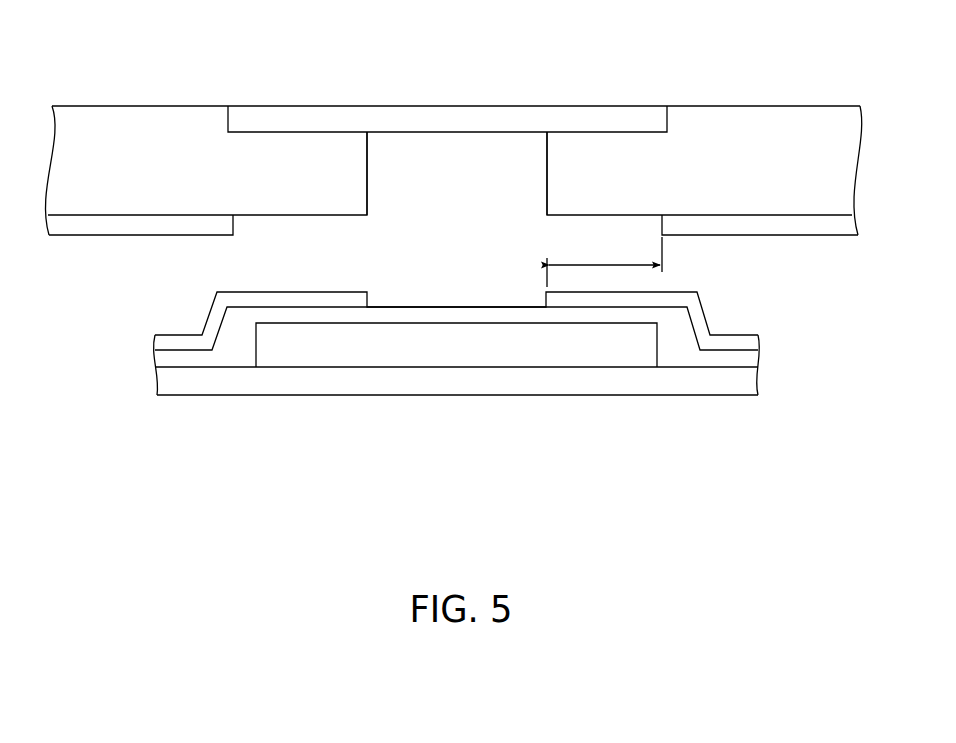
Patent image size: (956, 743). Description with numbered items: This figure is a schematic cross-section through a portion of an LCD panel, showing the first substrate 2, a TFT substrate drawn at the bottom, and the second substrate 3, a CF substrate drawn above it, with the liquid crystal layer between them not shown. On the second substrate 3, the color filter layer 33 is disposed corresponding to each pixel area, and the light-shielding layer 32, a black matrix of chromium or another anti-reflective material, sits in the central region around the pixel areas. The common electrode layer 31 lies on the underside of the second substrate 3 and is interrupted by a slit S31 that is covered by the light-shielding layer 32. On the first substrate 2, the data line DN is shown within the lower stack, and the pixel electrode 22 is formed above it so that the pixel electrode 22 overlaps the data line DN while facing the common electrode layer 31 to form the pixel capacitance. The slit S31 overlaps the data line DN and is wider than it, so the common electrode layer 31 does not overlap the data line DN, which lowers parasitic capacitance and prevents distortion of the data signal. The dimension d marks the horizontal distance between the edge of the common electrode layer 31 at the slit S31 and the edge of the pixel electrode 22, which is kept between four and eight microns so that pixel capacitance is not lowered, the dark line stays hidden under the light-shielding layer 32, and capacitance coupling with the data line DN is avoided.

The first substrate 2 is at (340, 402).
The pixel electrode 22 is at (158, 339).
The second substrate 3 is at (313, 97).
The common electrode layer 31 is at (140, 229).
The light-shielding layer 32 is at (438, 118).
The color filter layer 33 is at (134, 128).
The slit S31 is at (469, 243).
The horizontal distance d is at (604, 262).
The data line DN is at (630, 350).